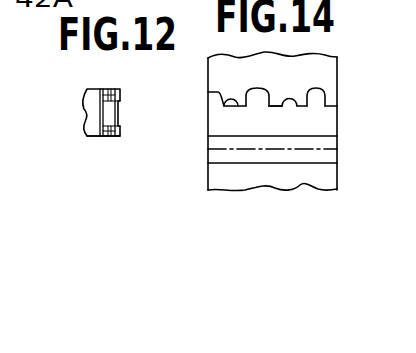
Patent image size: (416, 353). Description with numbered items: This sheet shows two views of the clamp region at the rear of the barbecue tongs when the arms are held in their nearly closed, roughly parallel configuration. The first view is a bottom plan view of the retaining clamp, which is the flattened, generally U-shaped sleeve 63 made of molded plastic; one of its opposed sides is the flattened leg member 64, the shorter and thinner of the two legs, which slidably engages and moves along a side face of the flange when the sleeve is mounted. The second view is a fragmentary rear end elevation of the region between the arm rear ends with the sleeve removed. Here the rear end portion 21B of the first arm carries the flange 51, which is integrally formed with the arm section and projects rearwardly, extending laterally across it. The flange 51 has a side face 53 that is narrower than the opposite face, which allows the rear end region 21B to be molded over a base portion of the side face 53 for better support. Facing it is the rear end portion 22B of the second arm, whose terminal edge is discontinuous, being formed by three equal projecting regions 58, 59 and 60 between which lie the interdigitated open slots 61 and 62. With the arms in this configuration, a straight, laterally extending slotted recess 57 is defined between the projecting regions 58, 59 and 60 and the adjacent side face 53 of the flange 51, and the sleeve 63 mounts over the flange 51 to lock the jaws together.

In FIG. 12, the U-shaped sleeve 63 is at (80, 108).
In FIG. 12, the leg member 64 is at (98, 138).
In FIG. 14, the rear end portion 22B is at (285, 68).
In FIG. 14, the rear end portion 21B is at (270, 177).
In FIG. 14, the projecting region 58 is at (208, 92).
In FIG. 14, the open slot 61 is at (253, 89).
In FIG. 14, the open slot 62 is at (323, 88).
In FIG. 14, the projecting region 60 is at (325, 98).
In FIG. 14, the projecting region 59 is at (297, 90).
In FIG. 14, the slotted recess 57 is at (230, 112).
In FIG. 14, the flange 51 is at (208, 149).
In FIG. 14, the side face 53 is at (317, 134).